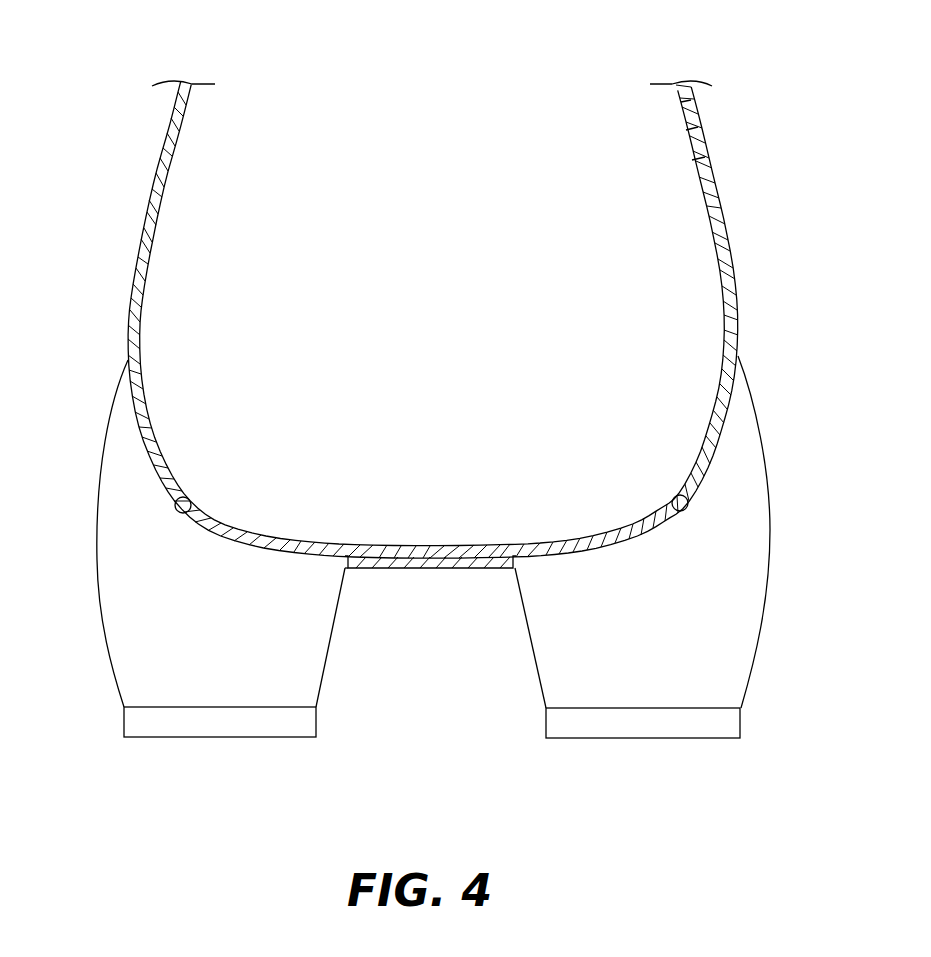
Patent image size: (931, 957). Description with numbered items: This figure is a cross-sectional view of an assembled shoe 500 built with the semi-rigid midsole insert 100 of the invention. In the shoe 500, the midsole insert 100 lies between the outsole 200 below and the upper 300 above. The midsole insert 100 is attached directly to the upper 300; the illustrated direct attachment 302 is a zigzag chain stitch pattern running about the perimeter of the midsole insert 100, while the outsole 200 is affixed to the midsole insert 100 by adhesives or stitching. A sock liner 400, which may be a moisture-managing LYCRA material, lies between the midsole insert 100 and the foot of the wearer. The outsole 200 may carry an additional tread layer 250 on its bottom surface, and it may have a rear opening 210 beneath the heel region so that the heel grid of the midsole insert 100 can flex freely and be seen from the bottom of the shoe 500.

The midsole insert 100 is at (415, 567).
The outsole 200 is at (112, 405).
The rear opening 210 is at (427, 622).
The tread layer 250 is at (185, 737).
The upper 300 is at (175, 122).
The direct attachment 302 is at (193, 498).
The sock liner 400 is at (685, 135).
The shoe 500 is at (367, 65).